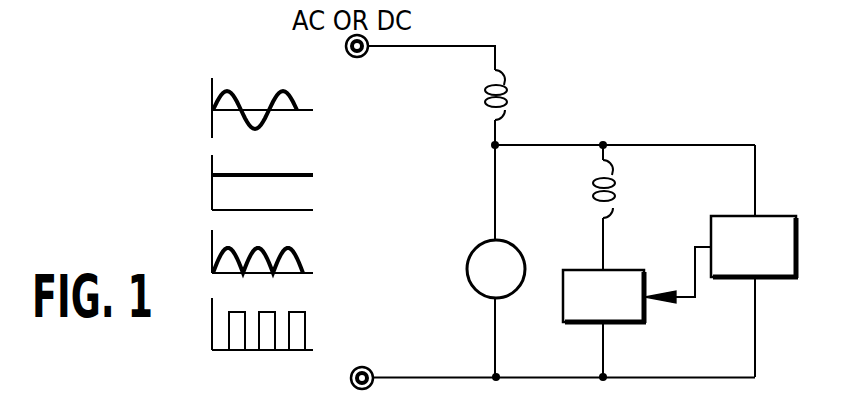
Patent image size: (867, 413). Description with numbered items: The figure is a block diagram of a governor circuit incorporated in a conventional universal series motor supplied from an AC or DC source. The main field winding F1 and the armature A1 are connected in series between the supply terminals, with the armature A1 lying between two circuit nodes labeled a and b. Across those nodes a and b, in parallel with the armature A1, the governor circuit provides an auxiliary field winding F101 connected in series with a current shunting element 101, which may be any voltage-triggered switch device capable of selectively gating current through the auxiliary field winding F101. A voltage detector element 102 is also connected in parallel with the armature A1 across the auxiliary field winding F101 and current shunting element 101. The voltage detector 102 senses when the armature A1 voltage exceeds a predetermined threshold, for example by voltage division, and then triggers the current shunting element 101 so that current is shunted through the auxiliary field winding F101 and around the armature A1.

The field winding F1 is at (515, 95).
The auxiliary field winding F101 is at (633, 189).
The armature A1 is at (496, 269).
The current shunting element 101 is at (604, 296).
The voltage detector element 102 is at (721, 259).
The node a is at (474, 147).
The node b is at (474, 356).